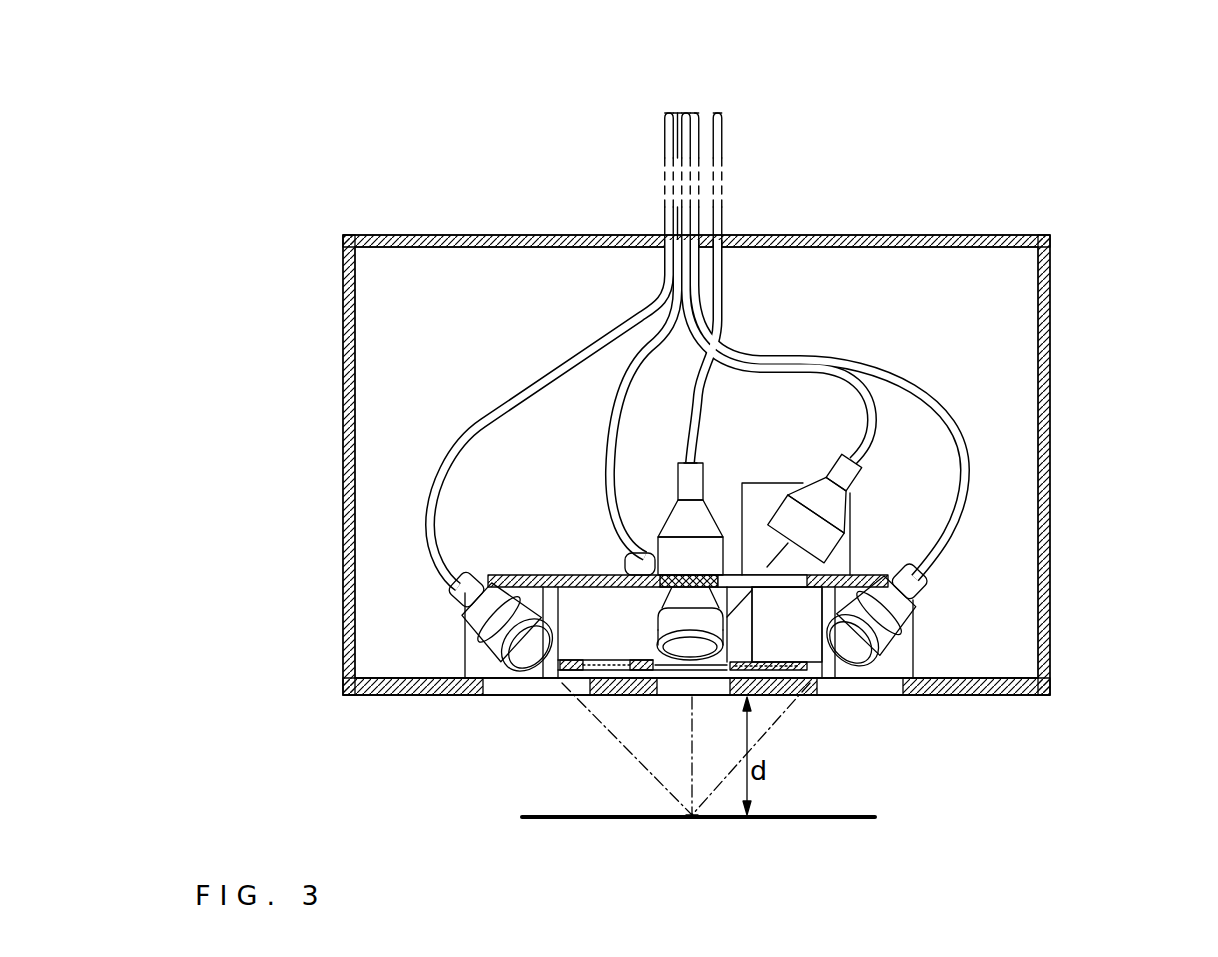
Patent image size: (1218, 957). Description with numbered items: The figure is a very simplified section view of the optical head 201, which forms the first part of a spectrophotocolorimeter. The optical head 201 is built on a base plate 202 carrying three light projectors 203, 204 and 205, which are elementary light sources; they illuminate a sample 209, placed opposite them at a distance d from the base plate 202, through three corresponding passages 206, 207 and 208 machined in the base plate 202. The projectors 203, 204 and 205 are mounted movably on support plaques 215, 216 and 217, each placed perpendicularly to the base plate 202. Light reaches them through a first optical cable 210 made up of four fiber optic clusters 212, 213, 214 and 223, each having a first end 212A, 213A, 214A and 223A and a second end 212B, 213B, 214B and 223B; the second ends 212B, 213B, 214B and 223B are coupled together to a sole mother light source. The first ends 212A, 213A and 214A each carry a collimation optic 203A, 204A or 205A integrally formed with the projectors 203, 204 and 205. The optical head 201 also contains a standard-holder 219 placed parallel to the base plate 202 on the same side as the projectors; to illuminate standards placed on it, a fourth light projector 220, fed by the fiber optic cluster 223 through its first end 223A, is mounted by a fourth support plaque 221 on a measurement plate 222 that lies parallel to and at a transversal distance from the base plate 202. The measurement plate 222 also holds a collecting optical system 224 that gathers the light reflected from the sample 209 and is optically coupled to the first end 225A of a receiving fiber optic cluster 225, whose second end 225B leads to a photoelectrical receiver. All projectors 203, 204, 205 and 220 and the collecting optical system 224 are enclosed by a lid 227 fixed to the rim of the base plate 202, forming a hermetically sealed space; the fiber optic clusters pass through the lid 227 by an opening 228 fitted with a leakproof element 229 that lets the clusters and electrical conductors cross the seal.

The optical head 201 is at (1094, 330).
The base plate 202 is at (987, 683).
The light projector 203 is at (455, 603).
The collimation optic 203A is at (465, 655).
The light projector 204 is at (657, 610).
The collimation optic 204A is at (667, 693).
The light projector 205 is at (925, 602).
The collimation optic 205A is at (851, 697).
The passage 206 is at (510, 690).
The passage 207 is at (700, 715).
The passage 208 is at (865, 687).
The sample 209 is at (792, 820).
The first optical cable 210 is at (670, 232).
The fiber optic cluster 212 is at (470, 433).
The first end 212A is at (453, 582).
The second end 212B is at (666, 113).
The fiber optic cluster 213 is at (625, 376).
The first end 213A is at (625, 556).
The second end 213B is at (675, 112).
The fiber optic cluster 214 is at (943, 400).
The first end 214A is at (935, 570).
The second end 214B is at (695, 112).
The support plaque 215 is at (527, 573).
The support plaque 216 is at (745, 630).
The support plaque 217 is at (905, 690).
The standard-holder 219 is at (816, 693).
The fourth light projector 220 is at (876, 465).
The fourth support plaque 221 is at (863, 548).
The measurement plate 222 is at (890, 548).
The fiber optic cluster 223 is at (872, 395).
The first end 223A is at (850, 445).
The second end 223B is at (687, 112).
The collecting optical system 224 is at (678, 492).
The receiving fiber optic cluster 225 is at (730, 210).
The first end 225A is at (700, 462).
The second end 225B is at (721, 112).
The lid 227 is at (430, 240).
The opening 228 is at (727, 230).
The leakproof element 229 is at (703, 240).